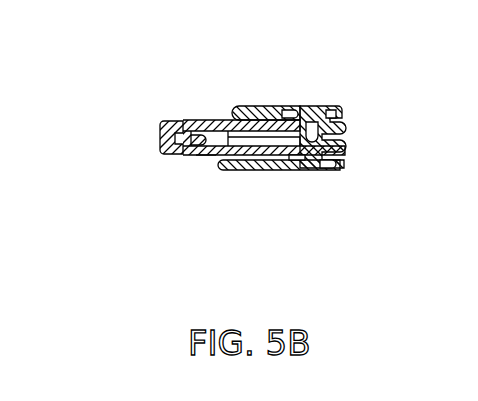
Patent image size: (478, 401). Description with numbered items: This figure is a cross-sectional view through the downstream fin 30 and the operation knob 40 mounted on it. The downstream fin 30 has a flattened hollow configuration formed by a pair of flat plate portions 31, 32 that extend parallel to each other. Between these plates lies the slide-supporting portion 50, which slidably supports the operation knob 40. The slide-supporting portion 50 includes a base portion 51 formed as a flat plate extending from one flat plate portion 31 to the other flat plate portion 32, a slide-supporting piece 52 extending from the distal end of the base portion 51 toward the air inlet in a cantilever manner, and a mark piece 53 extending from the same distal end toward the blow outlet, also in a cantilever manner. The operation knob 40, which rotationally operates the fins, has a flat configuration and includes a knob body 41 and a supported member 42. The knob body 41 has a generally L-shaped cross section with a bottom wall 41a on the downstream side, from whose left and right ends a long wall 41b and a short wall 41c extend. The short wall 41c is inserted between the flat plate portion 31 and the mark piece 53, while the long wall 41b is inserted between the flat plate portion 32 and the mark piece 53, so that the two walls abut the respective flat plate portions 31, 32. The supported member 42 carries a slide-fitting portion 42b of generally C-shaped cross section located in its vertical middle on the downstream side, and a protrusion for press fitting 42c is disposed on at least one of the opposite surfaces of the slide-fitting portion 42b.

The downstream fin 30 is at (285, 130).
The flat plate portion 31 is at (241, 108).
The flat plate portion 32 is at (234, 170).
The operation knob 40 is at (132, 123).
The knob body 41 is at (163, 159).
The bottom wall 41a is at (200, 153).
The long wall 41b is at (206, 158).
The short wall 41c is at (205, 122).
The supported member 42 is at (292, 161).
The slide-fitting portion 42b is at (329, 169).
The protrusion for press fitting 42c is at (296, 161).
The slide-supporting portion 50 is at (348, 80).
The base portion 51 is at (318, 112).
The slide-supporting piece 52 is at (308, 53).
The mark piece 53 is at (286, 112).